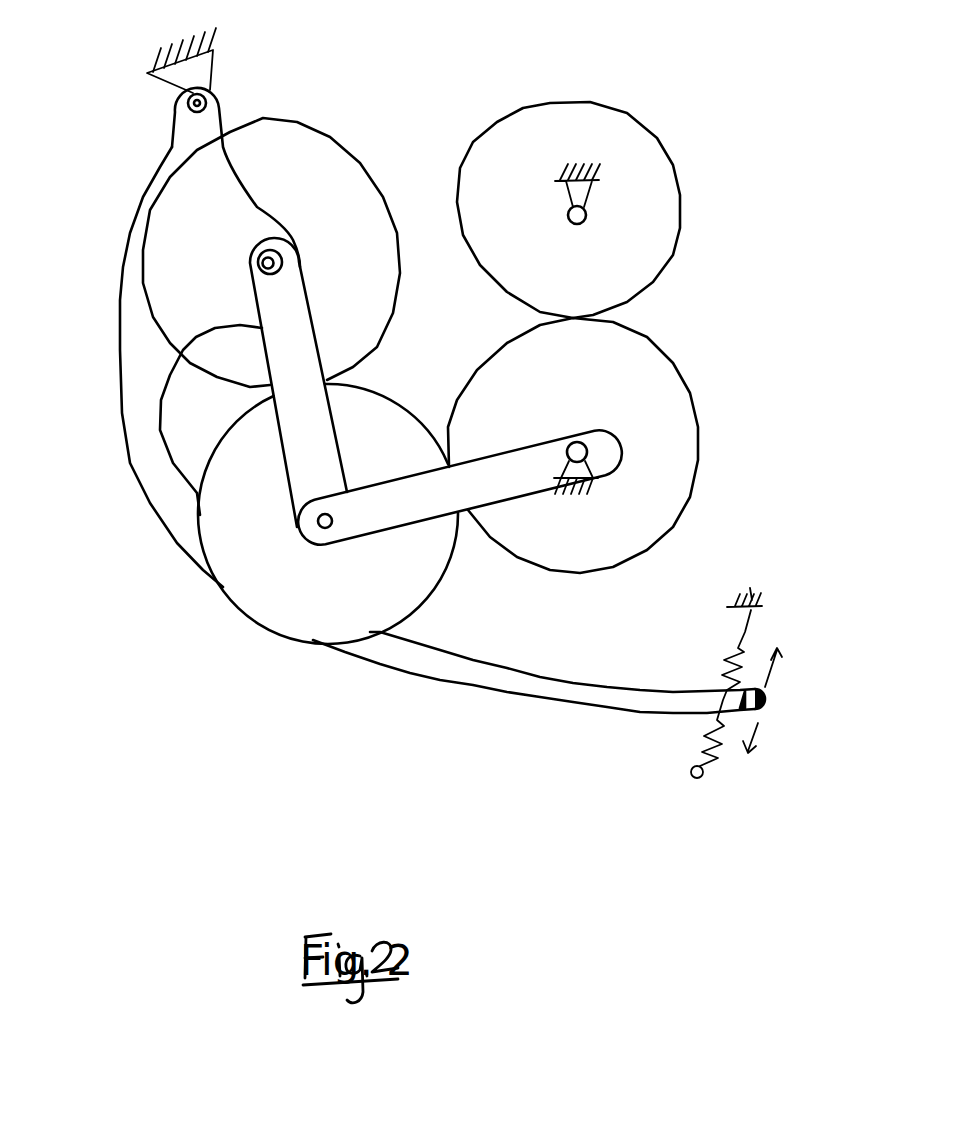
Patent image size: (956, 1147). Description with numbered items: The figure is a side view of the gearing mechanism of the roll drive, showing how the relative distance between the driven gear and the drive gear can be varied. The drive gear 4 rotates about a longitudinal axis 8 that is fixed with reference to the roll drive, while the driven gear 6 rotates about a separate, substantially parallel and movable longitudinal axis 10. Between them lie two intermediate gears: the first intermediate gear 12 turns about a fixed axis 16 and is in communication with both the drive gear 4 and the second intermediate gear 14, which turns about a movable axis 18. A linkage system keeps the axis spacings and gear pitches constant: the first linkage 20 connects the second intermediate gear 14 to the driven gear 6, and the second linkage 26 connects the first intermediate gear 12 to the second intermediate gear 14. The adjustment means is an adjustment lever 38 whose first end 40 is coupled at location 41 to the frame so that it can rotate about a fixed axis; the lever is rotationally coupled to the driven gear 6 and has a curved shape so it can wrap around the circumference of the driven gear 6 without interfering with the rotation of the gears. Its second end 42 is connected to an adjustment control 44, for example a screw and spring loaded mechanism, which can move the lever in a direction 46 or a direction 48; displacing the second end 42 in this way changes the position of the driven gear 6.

The drive gear 4 is at (663, 197).
The driven gear 6 is at (310, 150).
The longitudinal axis 8 is at (587, 217).
The longitudinal axis 10 is at (262, 262).
The first intermediate gear 12 is at (660, 397).
The second intermediate gear 14 is at (286, 613).
The fixed axis 16 is at (590, 453).
The movable axis 18 is at (312, 532).
The first linkage 20 is at (283, 357).
The second linkage 26 is at (400, 560).
The adjustment lever 38 is at (123, 437).
The first end 40 is at (213, 90).
The location 41 is at (186, 103).
The second end 42 is at (772, 697).
The adjustment control 44 is at (770, 605).
The direction 46 is at (790, 651).
The direction 48 is at (763, 756).